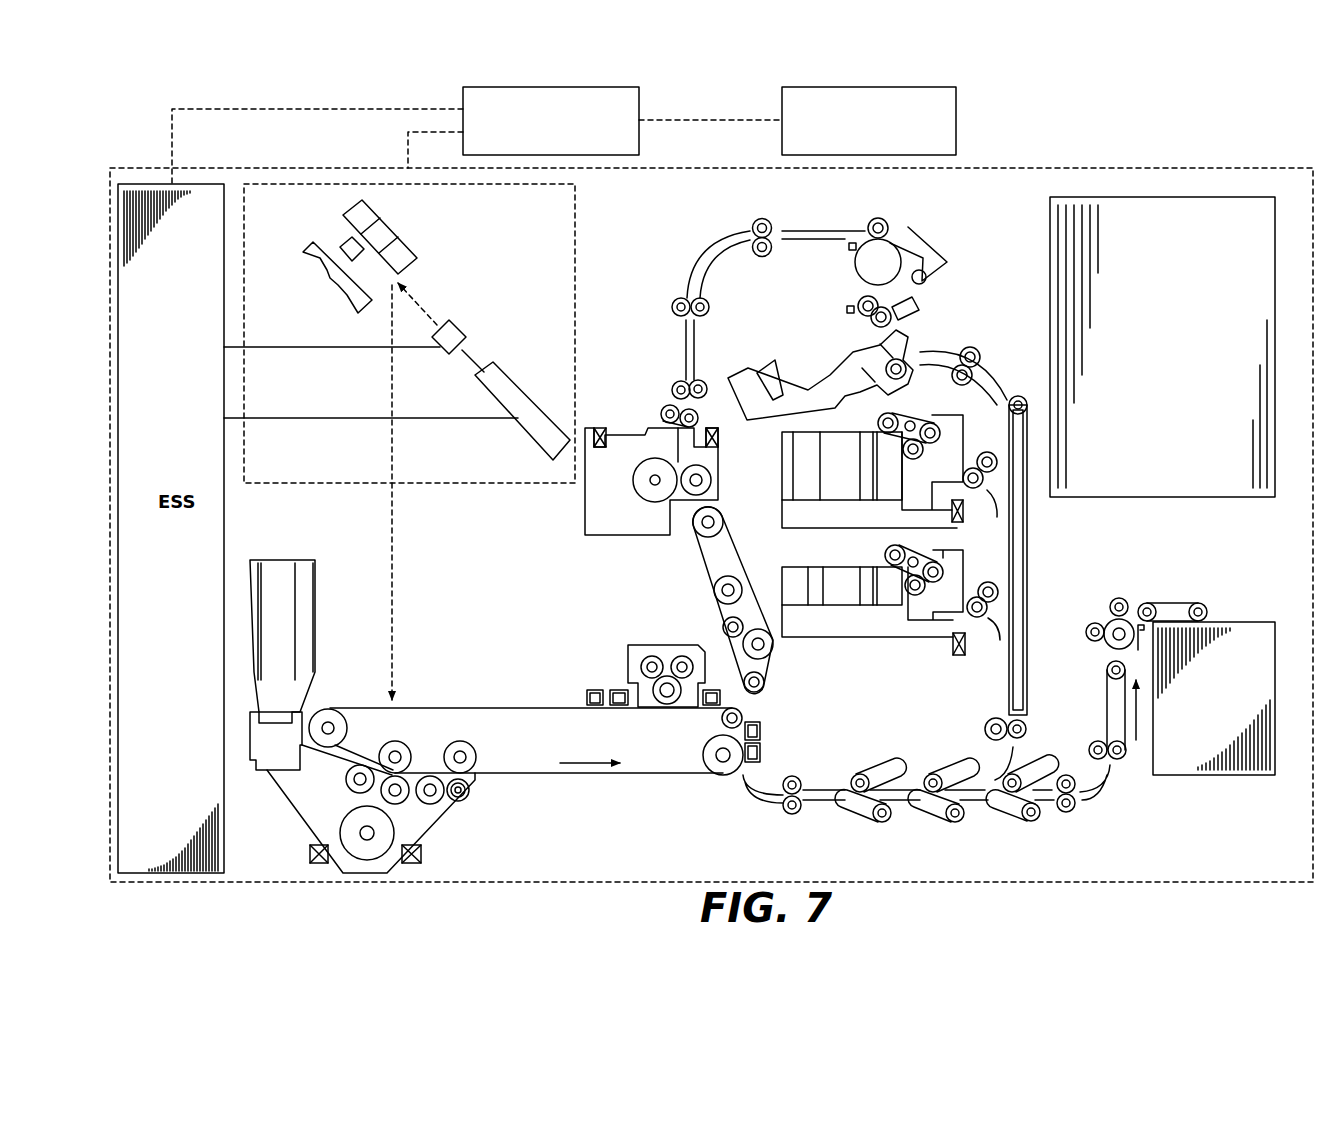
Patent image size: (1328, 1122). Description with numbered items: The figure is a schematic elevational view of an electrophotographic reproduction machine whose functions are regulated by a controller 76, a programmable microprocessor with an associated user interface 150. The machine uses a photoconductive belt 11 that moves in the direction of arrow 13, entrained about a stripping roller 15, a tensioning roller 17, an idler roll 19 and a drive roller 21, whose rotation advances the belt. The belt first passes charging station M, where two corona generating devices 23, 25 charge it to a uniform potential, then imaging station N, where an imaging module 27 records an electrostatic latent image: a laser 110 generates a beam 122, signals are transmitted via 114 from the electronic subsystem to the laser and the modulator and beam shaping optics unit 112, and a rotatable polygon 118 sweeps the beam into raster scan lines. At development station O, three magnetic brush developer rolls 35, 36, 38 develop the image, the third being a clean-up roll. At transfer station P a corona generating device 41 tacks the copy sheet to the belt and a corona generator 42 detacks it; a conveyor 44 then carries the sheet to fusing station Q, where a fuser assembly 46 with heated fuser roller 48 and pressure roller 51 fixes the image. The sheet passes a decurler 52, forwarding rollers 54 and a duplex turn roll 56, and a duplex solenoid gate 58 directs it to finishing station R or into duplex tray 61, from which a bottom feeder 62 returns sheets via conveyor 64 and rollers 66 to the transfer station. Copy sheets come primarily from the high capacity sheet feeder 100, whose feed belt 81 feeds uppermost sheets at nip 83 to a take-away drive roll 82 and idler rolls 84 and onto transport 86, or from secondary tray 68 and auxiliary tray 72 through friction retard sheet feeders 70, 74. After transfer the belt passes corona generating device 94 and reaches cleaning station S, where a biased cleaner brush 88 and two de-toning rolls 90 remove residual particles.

The controller 76 is at (455, 88).
The user interface 150 is at (957, 125).
The imaging module 27 is at (465, 483).
The laser 110 is at (518, 432).
The modulator and beam shaping optics unit 112 is at (463, 330).
The signal path 114 is at (412, 298).
The rotatable polygon 118 is at (370, 248).
The beam of monochromatic radiation 122 is at (393, 648).
The tensioning roller 17 is at (328, 709).
The idler roll 19 is at (458, 741).
The magnetic brush developer roll 35 is at (348, 782).
The magnetic brush developer roll 36 is at (397, 804).
The developer roll 38 is at (460, 798).
The photoconductive belt 11 is at (538, 775).
The arrow 13 is at (588, 775).
The fuser assembly 46 is at (628, 420).
The fuser roller 48 is at (634, 490).
The pressure roller 51 is at (713, 480).
The decurler 52 is at (668, 402).
The forwarding rollers 54 is at (762, 218).
The duplex turn roll 56 is at (855, 276).
The duplex solenoid gate 58 is at (931, 250).
The duplex tray 61 is at (802, 394).
The bottom feeder 62 is at (906, 383).
The sheet feeder 70 is at (940, 412).
The conveyor 64 is at (1028, 565).
The secondary tray 68 is at (832, 526).
The auxiliary tray 72 is at (862, 637).
The sheet feeder 74 is at (925, 553).
The conveyor 44 is at (698, 570).
The de-toning rolls 90 is at (684, 657).
The cleaner brush 88 is at (662, 706).
The corona generating device 25 is at (590, 690).
The corona generating device 23 is at (618, 690).
The stripping roller 15 is at (722, 719).
The corona generating device 94 is at (720, 700).
The drive roller 21 is at (728, 770).
The corona generator 42 is at (762, 727).
The corona generating device 41 is at (762, 752).
The rollers 66 is at (860, 773).
The take-away drive roll 82 is at (1104, 624).
The idler rolls 84 is at (1112, 598).
The nip 83 is at (1139, 620).
The feed belt 81 is at (1173, 603).
The transport 86 is at (1107, 700).
The high capacity variable sheet size sheet feeder 100 is at (1247, 613).
The finishing station R is at (1113, 506).
The fusing station Q is at (591, 546).
The imaging station N is at (536, 670).
The charging station M is at (599, 670).
The cleaning station S is at (661, 640).
The transfer station P is at (768, 745).
The development station O is at (448, 818).